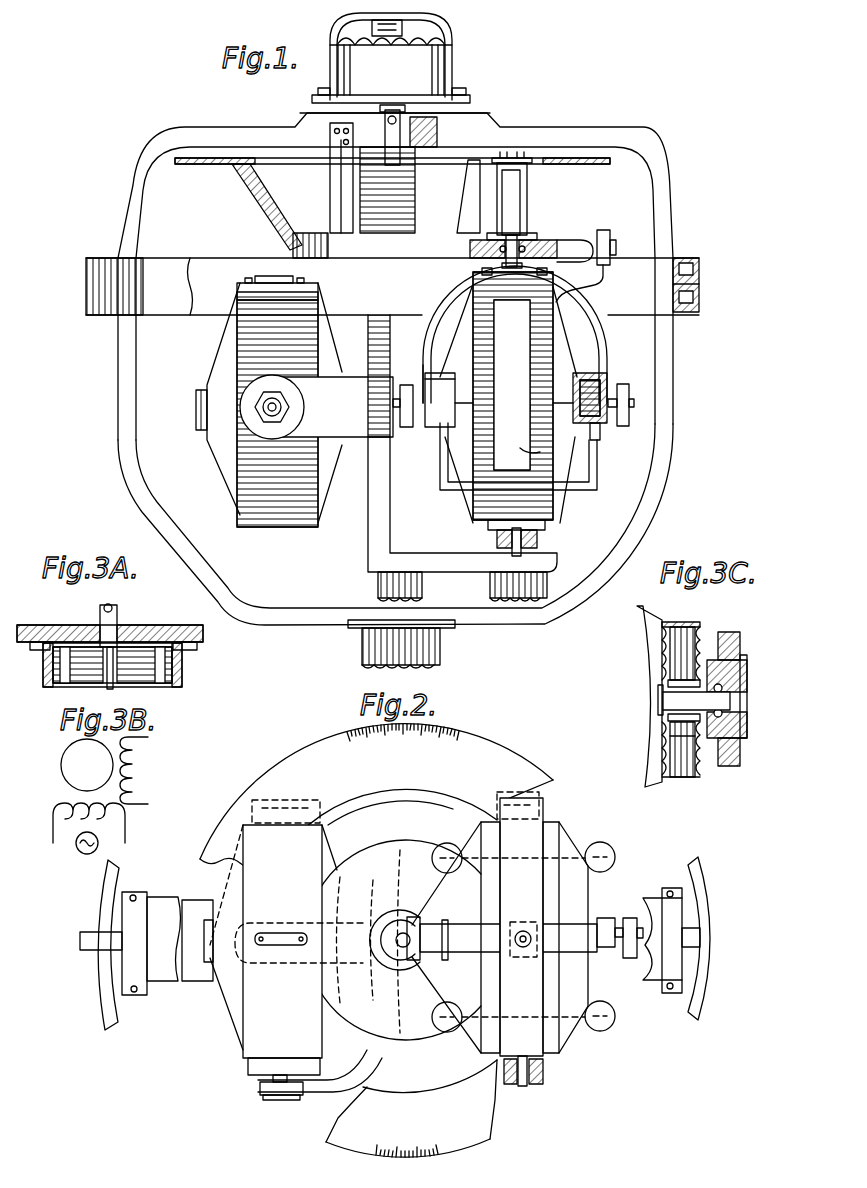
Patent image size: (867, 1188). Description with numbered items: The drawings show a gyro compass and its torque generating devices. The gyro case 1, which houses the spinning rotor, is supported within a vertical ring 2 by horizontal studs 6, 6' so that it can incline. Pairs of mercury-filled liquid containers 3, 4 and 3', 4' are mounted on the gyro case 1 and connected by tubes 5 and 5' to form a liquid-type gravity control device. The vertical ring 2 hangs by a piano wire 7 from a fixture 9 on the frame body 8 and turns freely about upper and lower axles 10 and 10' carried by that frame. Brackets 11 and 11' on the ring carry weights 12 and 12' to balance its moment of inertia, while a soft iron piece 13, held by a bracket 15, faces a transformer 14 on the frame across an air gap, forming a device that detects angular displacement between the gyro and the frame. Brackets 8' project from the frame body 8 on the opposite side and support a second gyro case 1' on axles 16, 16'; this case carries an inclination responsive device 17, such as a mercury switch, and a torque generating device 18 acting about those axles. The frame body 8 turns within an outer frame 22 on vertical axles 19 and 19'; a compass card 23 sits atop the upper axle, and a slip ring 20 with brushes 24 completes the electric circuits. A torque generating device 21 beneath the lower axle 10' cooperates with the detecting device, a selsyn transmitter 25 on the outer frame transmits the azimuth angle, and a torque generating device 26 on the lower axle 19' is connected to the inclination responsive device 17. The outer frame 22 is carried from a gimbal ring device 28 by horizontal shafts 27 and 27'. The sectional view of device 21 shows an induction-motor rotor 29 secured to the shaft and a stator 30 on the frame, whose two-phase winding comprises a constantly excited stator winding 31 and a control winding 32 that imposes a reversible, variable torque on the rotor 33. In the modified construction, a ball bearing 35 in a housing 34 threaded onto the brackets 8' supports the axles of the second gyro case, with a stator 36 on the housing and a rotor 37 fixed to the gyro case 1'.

In FIG. 1, the gyro case 1 is at (512, 399).
In FIG. 2, the gyro case 1 is at (536, 942).
In FIG. 1, the gyro case 1' is at (213, 399).
In FIG. 3C, the gyro case 1' is at (650, 696).
In FIG. 1, the vertical ring 2 is at (540, 452).
In FIG. 1, the liquid container 3 is at (602, 400).
In FIG. 2, the liquid container 3 is at (608, 1033).
In FIG. 2, the liquid container 3' is at (618, 857).
In FIG. 1, the liquid container 4 is at (440, 387).
In FIG. 2, the liquid container 4 is at (504, 1036).
In FIG. 2, the liquid container 4' is at (500, 844).
In FIG. 1, the tube 5 is at (518, 484).
In FIG. 2, the tube 5 is at (567, 946).
In FIG. 2, the tube 5' is at (513, 930).
In FIG. 1, the horizontal stud 6 is at (450, 436).
In FIG. 2, the horizontal stud 6 is at (524, 1083).
In FIG. 2, the horizontal stud 6' is at (535, 805).
In FIG. 1, the piano wire 7 is at (512, 206).
In FIG. 1, the frame body 8 is at (310, 231).
In FIG. 3A, the frame body 8 is at (110, 625).
In FIG. 2, the frame body 8 is at (388, 940).
In FIG. 1, the bracket 8' is at (332, 403).
In FIG. 3C, the bracket 8' is at (742, 696).
In FIG. 2, the bracket 8' is at (320, 1087).
In FIG. 1, the fixture 9 is at (527, 181).
In FIG. 1, the upper axle 10 is at (523, 235).
In FIG. 1, the lower axle 10' is at (540, 542).
In FIG. 3A, the lower axle 10' is at (129, 641).
In FIG. 1, the bracket 11 is at (533, 334).
In FIG. 2, the bracket 11 is at (500, 921).
In FIG. 1, the bracket 11' is at (407, 363).
In FIG. 1, the weight 12 is at (628, 405).
In FIG. 2, the weight 12 is at (629, 967).
In FIG. 1, the weight 12' is at (433, 421).
In FIG. 1, the soft iron piece 13 is at (611, 234).
In FIG. 1, the transformer 14 is at (581, 237).
In FIG. 1, the bracket 15 is at (601, 279).
In FIG. 1, the axle 16 is at (272, 389).
In FIG. 3C, the axle 16 is at (722, 703).
In FIG. 2, the axle 16 is at (265, 1099).
In FIG. 2, the axle 16' is at (266, 798).
In FIG. 1, the inclination responsive device 17 is at (270, 283).
In FIG. 2, the inclination responsive device 17 is at (281, 939).
In FIG. 1, the torque generating device 18 is at (246, 396).
In FIG. 3C, the torque generating device 18 is at (697, 626).
In FIG. 2, the torque generating device 18 is at (257, 1065).
In FIG. 1, the vertical axle 19 is at (443, 125).
In FIG. 1, the vertical axle 19' is at (375, 587).
In FIG. 1, the slip ring 20 is at (415, 186).
In FIG. 1, the torque generating device 21 is at (522, 590).
In FIG. 3A, the torque generating device 21 is at (50, 680).
In FIG. 1, the outer frame 22 is at (548, 126).
In FIG. 2, the outer frame 22 is at (190, 904).
In FIG. 1, the compass card 23 is at (200, 158).
In FIG. 2, the compass card 23 is at (513, 766).
In FIG. 1, the brush 24 is at (331, 181).
In FIG. 1, the selsyn transmitter 25 is at (447, 64).
In FIG. 1, the torque generating device 26 is at (442, 648).
In FIG. 1, the horizontal shaft 27 is at (688, 267).
In FIG. 2, the horizontal shaft 27 is at (692, 940).
In FIG. 2, the horizontal shaft 27' is at (89, 938).
In FIG. 1, the gimbal ring device 28 is at (206, 276).
In FIG. 2, the gimbal ring device 28 is at (117, 897).
In FIG. 3A, the rotor 29 is at (84, 662).
In FIG. 3A, the stator 30 is at (170, 667).
In FIG. 3B, the stator winding 31 is at (118, 825).
In FIG. 3B, the control winding 32 is at (140, 775).
In FIG. 3B, the rotor 33 is at (61, 765).
In FIG. 3C, the ball bearing housing 34 is at (748, 737).
In FIG. 3C, the ball bearing 35 is at (723, 687).
In FIG. 3C, the stator 36 is at (680, 731).
In FIG. 3C, the rotor 37 is at (699, 763).